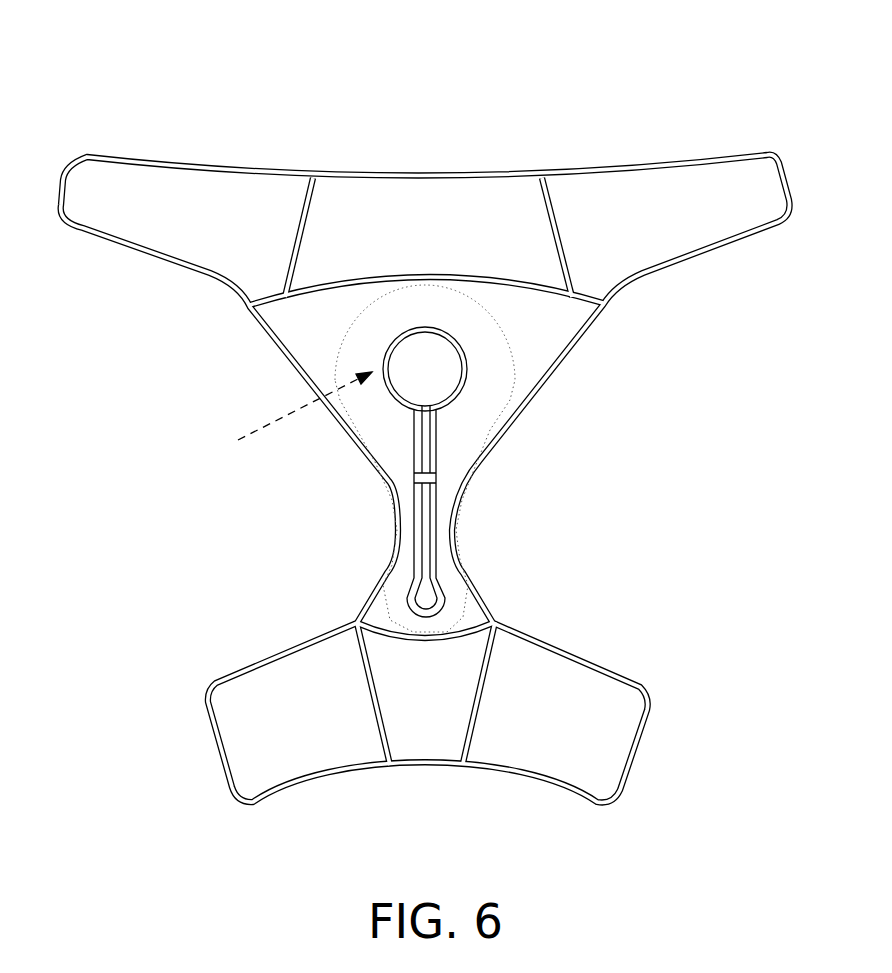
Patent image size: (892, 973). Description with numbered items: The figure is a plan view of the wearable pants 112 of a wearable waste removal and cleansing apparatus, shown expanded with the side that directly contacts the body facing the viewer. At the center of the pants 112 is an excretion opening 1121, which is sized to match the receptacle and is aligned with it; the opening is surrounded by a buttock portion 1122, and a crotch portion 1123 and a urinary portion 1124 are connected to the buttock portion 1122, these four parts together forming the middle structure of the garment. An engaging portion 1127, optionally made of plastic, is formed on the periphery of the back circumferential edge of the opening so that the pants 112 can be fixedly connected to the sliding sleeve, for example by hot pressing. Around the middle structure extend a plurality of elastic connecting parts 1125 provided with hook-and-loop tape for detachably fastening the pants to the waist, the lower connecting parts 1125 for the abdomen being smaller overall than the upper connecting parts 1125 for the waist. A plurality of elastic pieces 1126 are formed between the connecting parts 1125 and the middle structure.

The wearable pants 112 is at (434, 403).
The excretion opening 1121 is at (435, 383).
The buttock portion 1122 is at (483, 337).
The crotch portion 1123 is at (447, 532).
The urinary portion 1124 is at (423, 593).
The connecting parts 1125 is at (110, 202).
The elastic pieces 1126 is at (525, 307).
The engaging portion 1127 is at (266, 418).